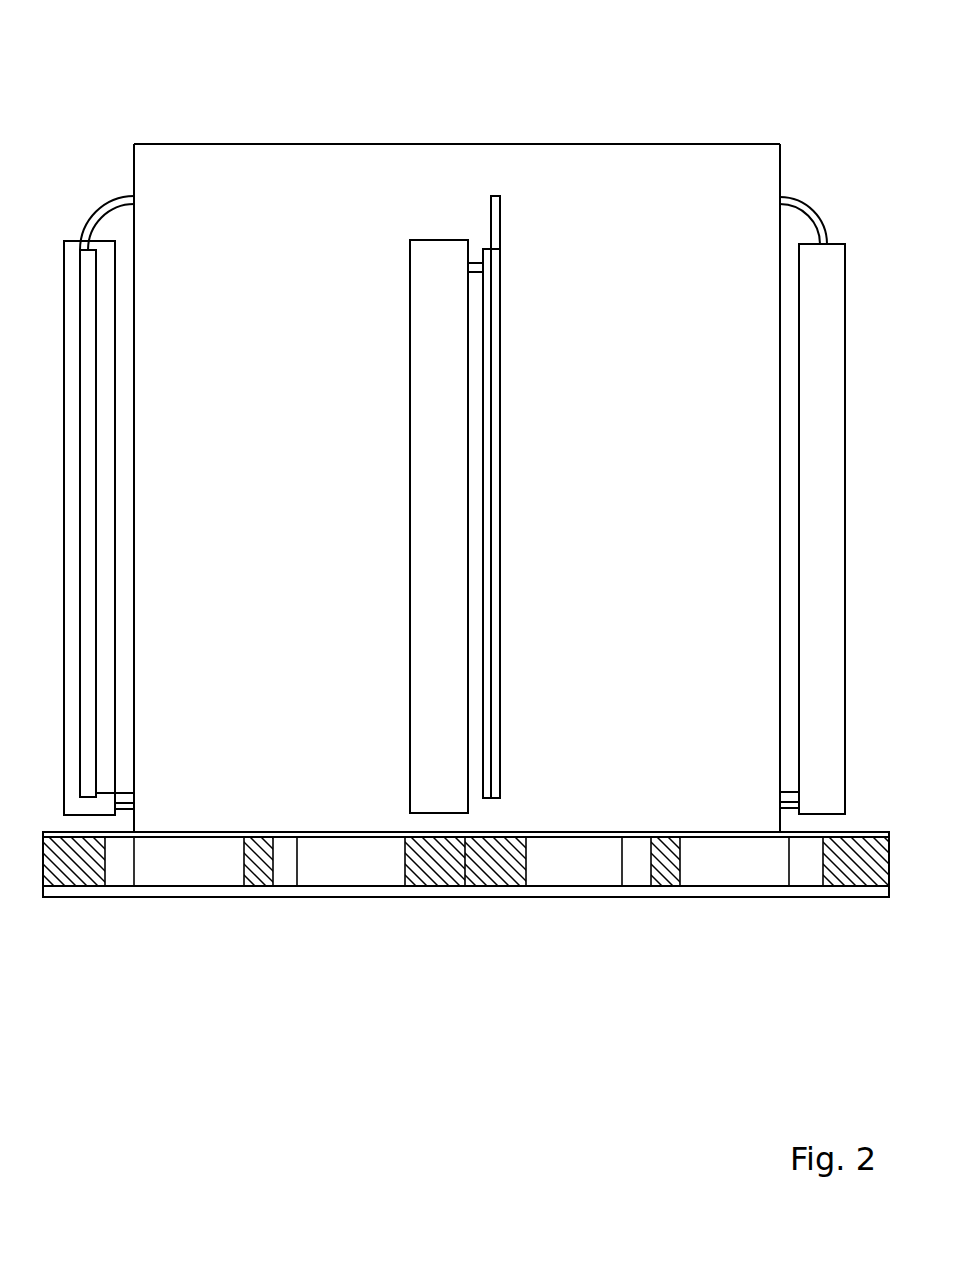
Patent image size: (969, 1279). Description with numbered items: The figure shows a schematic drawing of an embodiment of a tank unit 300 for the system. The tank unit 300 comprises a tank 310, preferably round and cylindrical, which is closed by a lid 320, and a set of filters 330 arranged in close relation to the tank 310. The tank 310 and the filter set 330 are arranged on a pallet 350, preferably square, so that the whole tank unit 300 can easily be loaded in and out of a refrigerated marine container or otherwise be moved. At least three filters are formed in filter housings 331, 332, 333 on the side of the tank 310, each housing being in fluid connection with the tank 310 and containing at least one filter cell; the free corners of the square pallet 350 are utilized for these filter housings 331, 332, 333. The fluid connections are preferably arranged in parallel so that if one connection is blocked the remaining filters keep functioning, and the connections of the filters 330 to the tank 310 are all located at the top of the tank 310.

The tank unit 300 is at (164, 113).
The tank 310 is at (725, 432).
The lid 320 is at (674, 170).
The set of filters 330 is at (460, 527).
The filter housing 331 is at (835, 590).
The filter housing 332 is at (432, 618).
The filter housing 333 is at (70, 537).
The pallet 350 is at (843, 890).